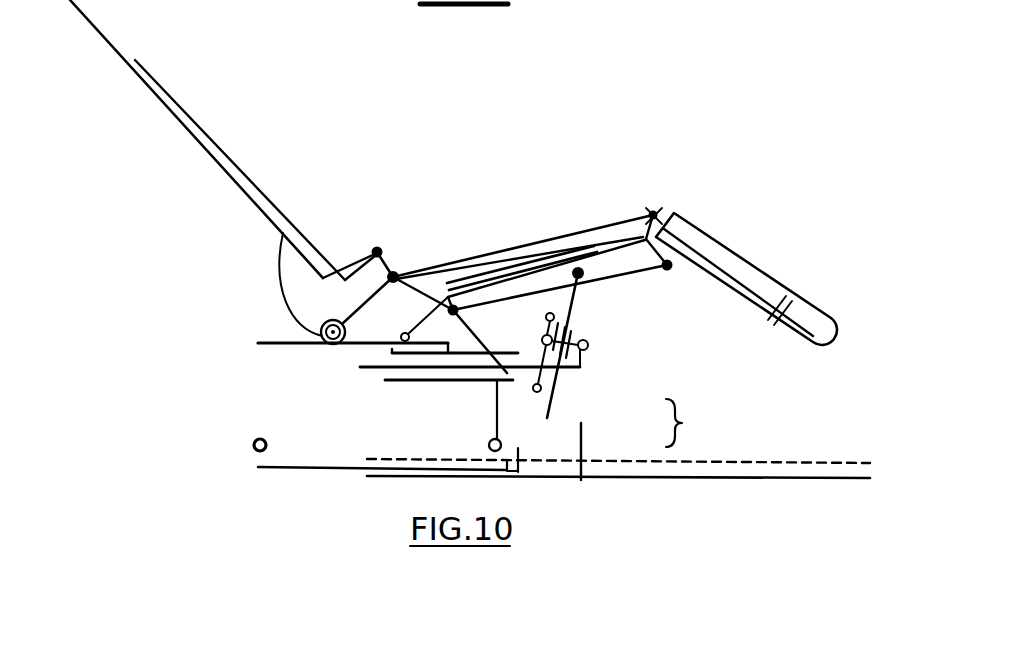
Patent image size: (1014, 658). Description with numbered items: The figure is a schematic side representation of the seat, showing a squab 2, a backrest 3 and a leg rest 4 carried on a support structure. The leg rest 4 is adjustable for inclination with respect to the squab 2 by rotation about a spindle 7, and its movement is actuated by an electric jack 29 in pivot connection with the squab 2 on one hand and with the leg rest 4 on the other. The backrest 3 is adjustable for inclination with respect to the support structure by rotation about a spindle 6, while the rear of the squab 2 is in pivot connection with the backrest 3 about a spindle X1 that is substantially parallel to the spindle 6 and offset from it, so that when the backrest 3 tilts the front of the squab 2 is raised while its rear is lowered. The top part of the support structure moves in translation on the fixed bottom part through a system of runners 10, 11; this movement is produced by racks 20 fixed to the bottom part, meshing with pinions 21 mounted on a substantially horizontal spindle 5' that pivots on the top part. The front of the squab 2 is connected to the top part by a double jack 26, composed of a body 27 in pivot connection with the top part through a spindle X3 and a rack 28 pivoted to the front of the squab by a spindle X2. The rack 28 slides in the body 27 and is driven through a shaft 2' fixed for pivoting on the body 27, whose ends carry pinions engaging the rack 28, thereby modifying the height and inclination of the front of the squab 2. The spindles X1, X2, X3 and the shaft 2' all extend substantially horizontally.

The squab 2 is at (533, 229).
The shaft 2' is at (472, 335).
The backrest 3 is at (199, 146).
The leg rest 4 is at (747, 252).
The spindle 5' is at (273, 284).
The spindle 6 is at (376, 247).
The spindle 7 is at (657, 212).
The runner 10 is at (363, 370).
The runner 11 is at (392, 355).
The rack 20 is at (270, 345).
The pinion 21 is at (320, 333).
The double jack 26 is at (693, 423).
The body 27 is at (583, 352).
The rack 28 is at (553, 398).
The electric jack 29 is at (520, 296).
The spindle X1 is at (395, 274).
The spindle X2 is at (583, 278).
The spindle X3 is at (588, 347).